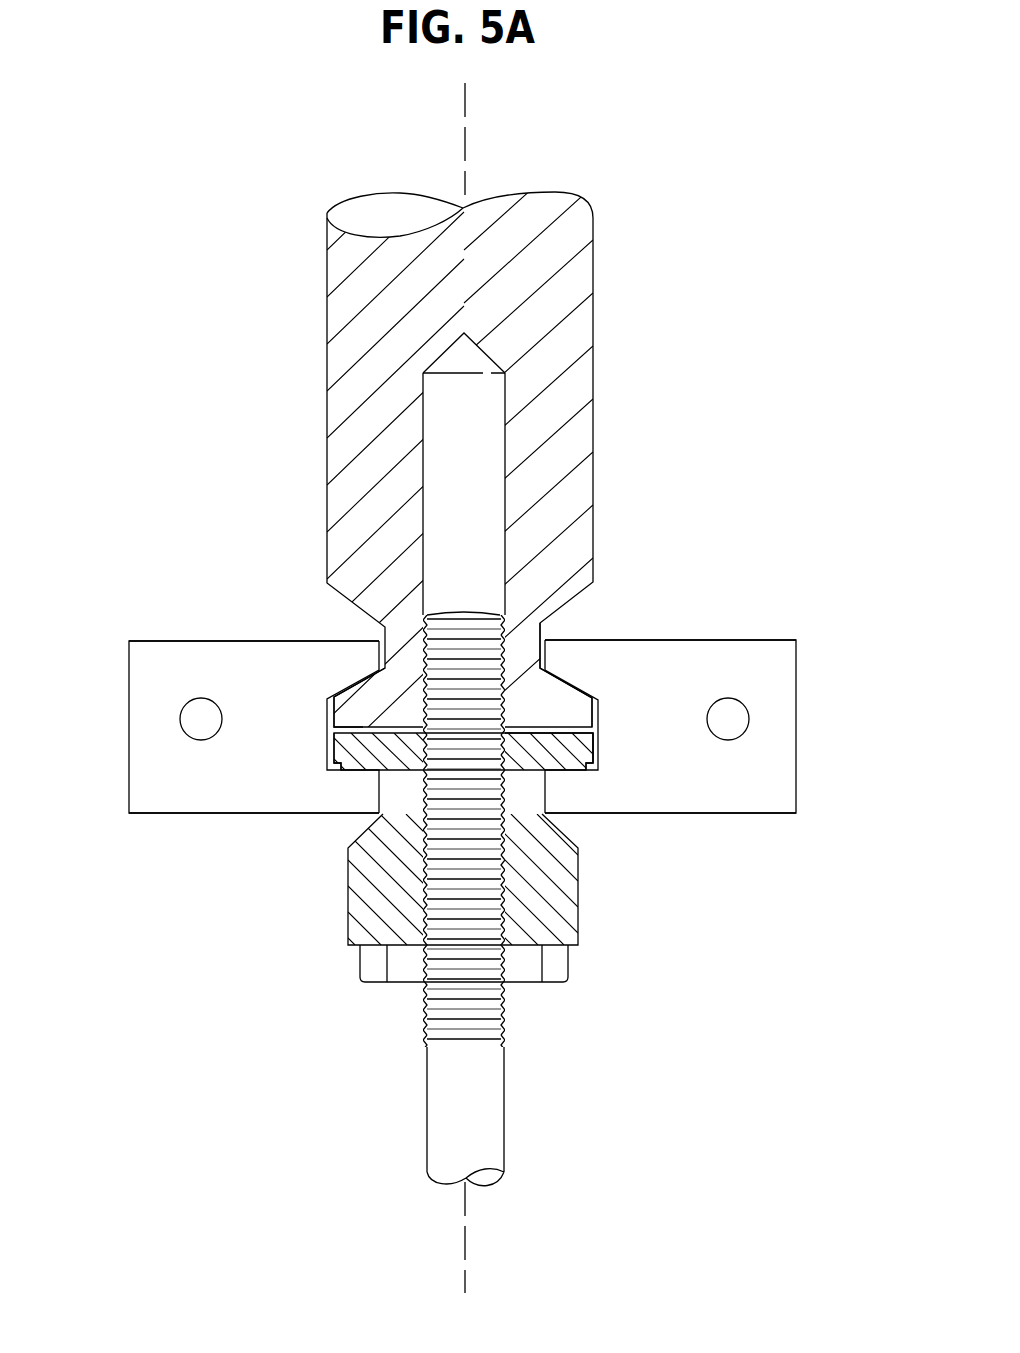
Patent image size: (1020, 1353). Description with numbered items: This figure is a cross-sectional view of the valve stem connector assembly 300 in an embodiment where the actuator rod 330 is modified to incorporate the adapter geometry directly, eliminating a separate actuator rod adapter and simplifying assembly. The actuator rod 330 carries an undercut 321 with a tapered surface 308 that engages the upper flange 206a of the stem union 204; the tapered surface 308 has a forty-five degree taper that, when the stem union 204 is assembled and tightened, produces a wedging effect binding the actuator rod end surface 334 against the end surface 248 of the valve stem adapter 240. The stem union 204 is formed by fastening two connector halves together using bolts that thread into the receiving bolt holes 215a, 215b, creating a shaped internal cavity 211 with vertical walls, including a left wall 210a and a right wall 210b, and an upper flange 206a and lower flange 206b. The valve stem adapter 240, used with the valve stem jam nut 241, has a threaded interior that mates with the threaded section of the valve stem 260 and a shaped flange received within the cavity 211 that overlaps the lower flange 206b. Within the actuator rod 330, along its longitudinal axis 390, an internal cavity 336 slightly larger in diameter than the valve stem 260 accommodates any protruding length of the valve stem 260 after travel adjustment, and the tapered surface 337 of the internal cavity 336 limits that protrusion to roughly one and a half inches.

The valve stem connector assembly 300 is at (148, 449).
The longitudinal axis 390 is at (467, 106).
The actuator rod 330 is at (604, 267).
The undercut 321 is at (552, 625).
The actuator rod end surface 334 is at (364, 723).
The internal cavity 336 is at (478, 440).
The tapered surface of the internal cavity 337 is at (440, 356).
The stem union 204 is at (462, 781).
The upper flange 206a is at (547, 655).
The lower flange 206b is at (552, 796).
The receiving bolt hole 215a is at (747, 735).
The receiving bolt hole 215b is at (182, 731).
The tapered surface 308 is at (576, 688).
The shaped internal cavity 211 is at (334, 729).
The end surface of the valve stem adapter 248 is at (530, 735).
The left wall of the cavity 210a is at (334, 762).
The right wall of the cavity 210b is at (599, 747).
The valve stem adapter 240 is at (590, 910).
The valve stem jam nut 241 is at (570, 980).
The valve stem 260 is at (490, 1098).